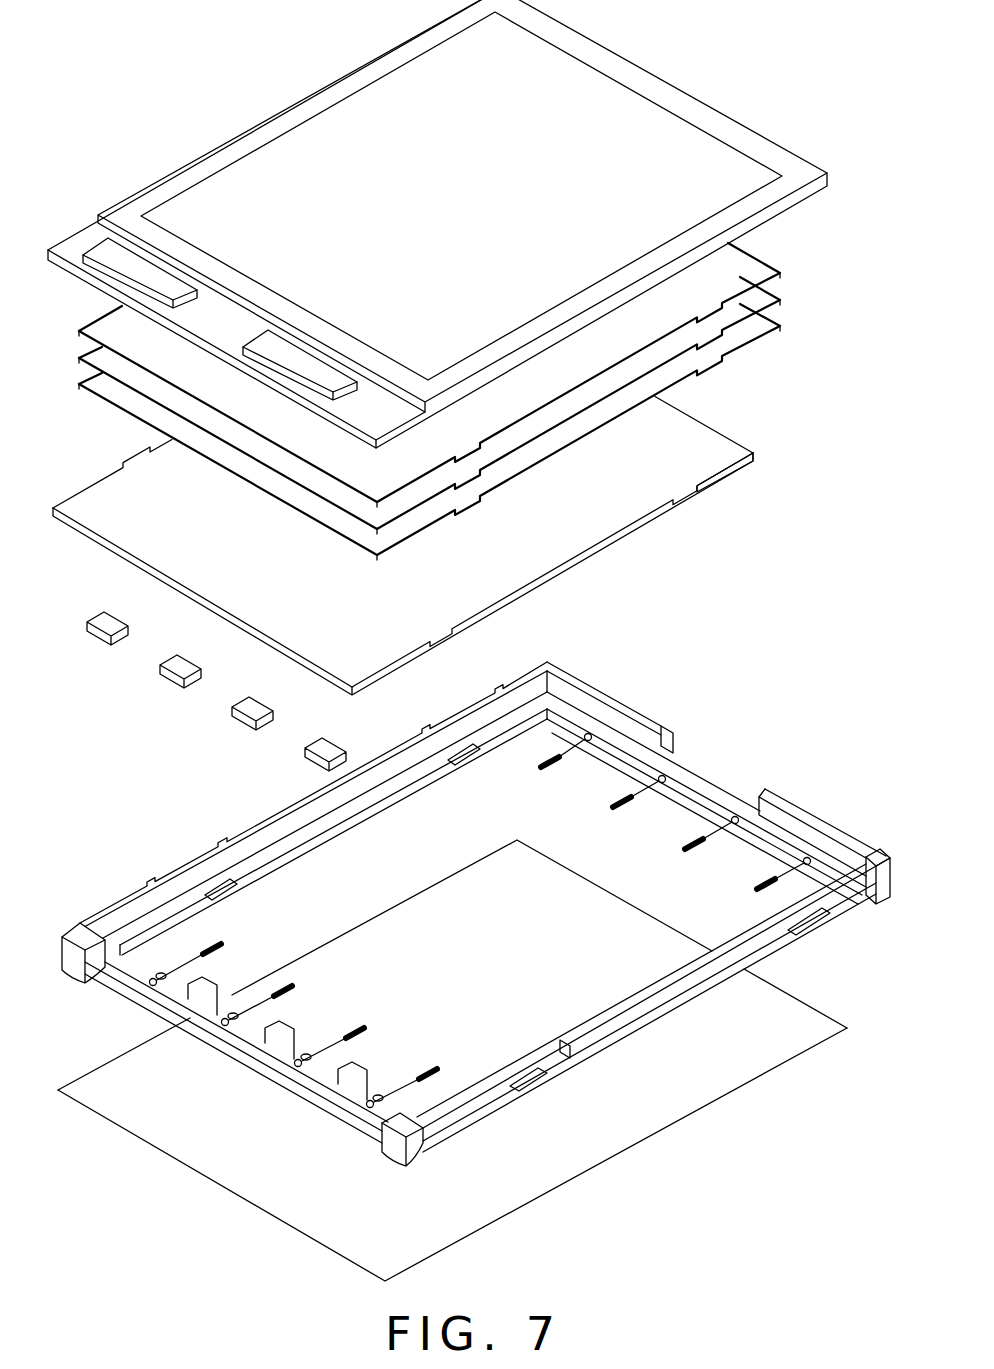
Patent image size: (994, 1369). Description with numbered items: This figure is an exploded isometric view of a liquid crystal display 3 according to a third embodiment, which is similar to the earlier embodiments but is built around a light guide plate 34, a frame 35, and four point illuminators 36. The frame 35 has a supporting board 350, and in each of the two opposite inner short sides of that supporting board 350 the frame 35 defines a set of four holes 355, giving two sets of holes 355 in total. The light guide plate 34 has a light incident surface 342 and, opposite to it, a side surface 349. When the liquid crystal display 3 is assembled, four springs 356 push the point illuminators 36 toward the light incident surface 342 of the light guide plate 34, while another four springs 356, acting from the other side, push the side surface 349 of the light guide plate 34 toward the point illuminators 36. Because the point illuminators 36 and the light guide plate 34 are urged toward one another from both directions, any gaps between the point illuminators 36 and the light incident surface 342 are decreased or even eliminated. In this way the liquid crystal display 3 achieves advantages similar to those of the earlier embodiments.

The liquid crystal display 3 is at (301, 42).
The light guide plate 34 is at (692, 448).
The light incident surface 342 is at (81, 525).
The side surface 349 is at (752, 453).
The point illuminators 36 is at (178, 663).
The frame 35 is at (612, 667).
The supporting board 350 is at (725, 800).
The holes 355 is at (664, 776).
The springs 356 is at (622, 795).